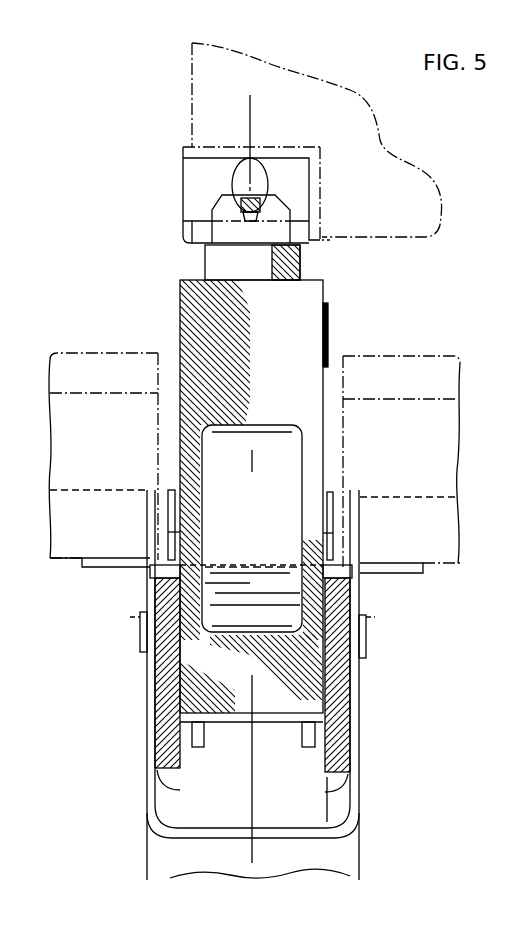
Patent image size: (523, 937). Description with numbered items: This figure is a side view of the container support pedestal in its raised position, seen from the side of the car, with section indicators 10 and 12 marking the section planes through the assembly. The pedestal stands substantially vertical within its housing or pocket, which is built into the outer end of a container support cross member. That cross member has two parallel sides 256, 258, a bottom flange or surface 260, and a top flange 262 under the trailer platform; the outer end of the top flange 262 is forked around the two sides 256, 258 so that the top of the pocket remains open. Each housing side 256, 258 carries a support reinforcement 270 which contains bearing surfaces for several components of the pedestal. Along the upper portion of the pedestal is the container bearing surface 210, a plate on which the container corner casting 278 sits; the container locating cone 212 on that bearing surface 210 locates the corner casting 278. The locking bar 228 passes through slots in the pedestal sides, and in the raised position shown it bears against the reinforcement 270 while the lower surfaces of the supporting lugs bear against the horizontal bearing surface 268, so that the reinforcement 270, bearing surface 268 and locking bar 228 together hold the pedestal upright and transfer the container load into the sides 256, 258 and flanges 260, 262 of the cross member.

The section line 10 is at (250, 103).
The section line 12 / body 12 is at (323, 316).
The container bearing surface 210 is at (232, 246).
The container locating cone 212 is at (216, 197).
The locking bar 228 is at (242, 592).
The housing side 256 is at (150, 693).
The housing side 258 is at (360, 705).
The bottom flange 260 is at (210, 842).
The top flange 262 is at (383, 576).
The horizontal bearing surface 268 is at (167, 553).
The support reinforcement 270 is at (150, 790).
The container corner casting 278 is at (184, 222).